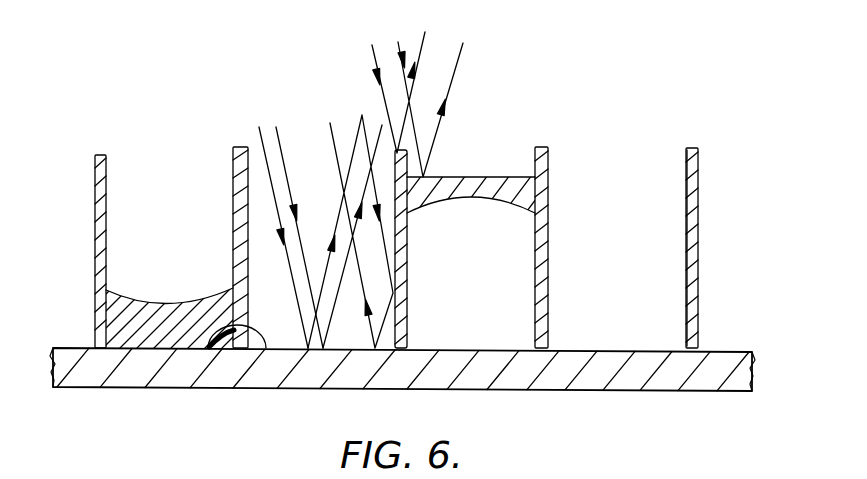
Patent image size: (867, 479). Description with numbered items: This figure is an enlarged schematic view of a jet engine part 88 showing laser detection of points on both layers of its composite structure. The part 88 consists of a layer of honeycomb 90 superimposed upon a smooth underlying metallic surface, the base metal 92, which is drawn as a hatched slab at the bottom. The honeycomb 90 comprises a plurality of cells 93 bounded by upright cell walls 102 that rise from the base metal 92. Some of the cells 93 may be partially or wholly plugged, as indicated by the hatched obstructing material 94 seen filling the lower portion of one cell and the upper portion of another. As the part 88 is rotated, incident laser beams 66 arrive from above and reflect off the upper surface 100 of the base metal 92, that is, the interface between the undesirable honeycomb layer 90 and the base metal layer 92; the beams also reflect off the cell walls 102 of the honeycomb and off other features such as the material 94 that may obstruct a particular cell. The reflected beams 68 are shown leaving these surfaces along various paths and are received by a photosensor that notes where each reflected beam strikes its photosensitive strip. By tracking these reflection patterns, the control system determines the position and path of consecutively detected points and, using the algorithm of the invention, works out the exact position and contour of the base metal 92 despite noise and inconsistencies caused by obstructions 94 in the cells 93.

The jet engine part 88 is at (89, 149).
The incident laser beam 66 is at (263, 140).
The reflected laser beam 68 is at (360, 145).
The obstructing material 94 is at (165, 297).
The upper surface of base metal 100 is at (213, 347).
The base metal 92 is at (257, 377).
The honeycomb 90 is at (699, 148).
The cell walls 102 is at (687, 210).
The cells 93 is at (633, 301).